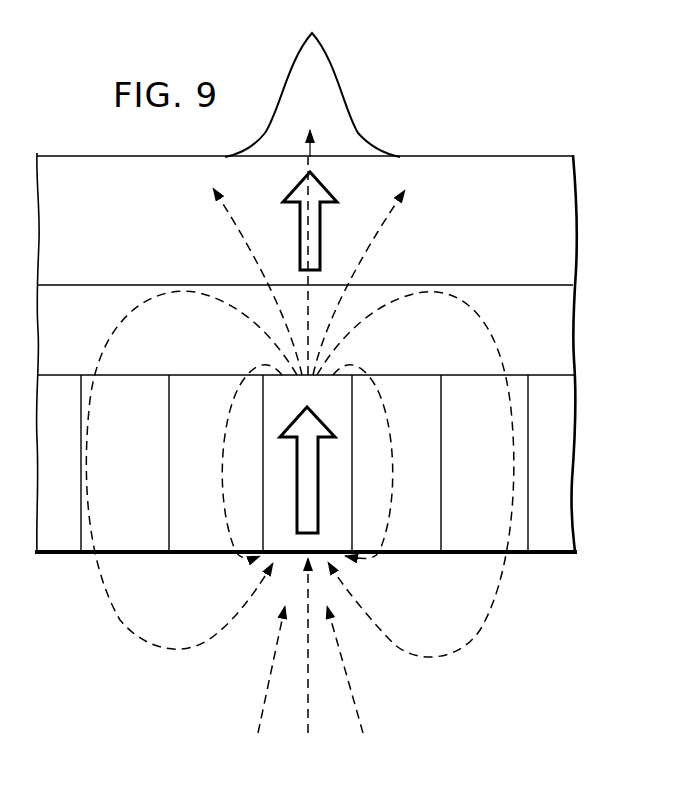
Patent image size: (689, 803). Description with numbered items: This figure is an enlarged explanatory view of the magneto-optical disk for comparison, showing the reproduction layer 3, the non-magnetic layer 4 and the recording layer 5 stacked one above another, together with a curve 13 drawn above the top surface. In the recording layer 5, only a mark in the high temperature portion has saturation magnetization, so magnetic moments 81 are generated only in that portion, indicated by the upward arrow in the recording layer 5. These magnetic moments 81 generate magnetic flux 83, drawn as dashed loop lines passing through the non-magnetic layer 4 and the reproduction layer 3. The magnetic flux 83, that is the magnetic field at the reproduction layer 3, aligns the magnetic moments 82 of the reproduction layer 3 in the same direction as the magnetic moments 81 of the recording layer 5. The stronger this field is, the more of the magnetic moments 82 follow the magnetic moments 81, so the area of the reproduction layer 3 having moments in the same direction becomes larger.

The reproduced signal waveform 13 is at (340, 90).
The reproduction layer 3 is at (537, 248).
The non-magnetic layer 4 is at (558, 343).
The recording layer 5 is at (560, 432).
The magnetic moments 81 is at (320, 514).
The magnetic moments 82 is at (322, 181).
The magnetic flux 83 is at (108, 333).